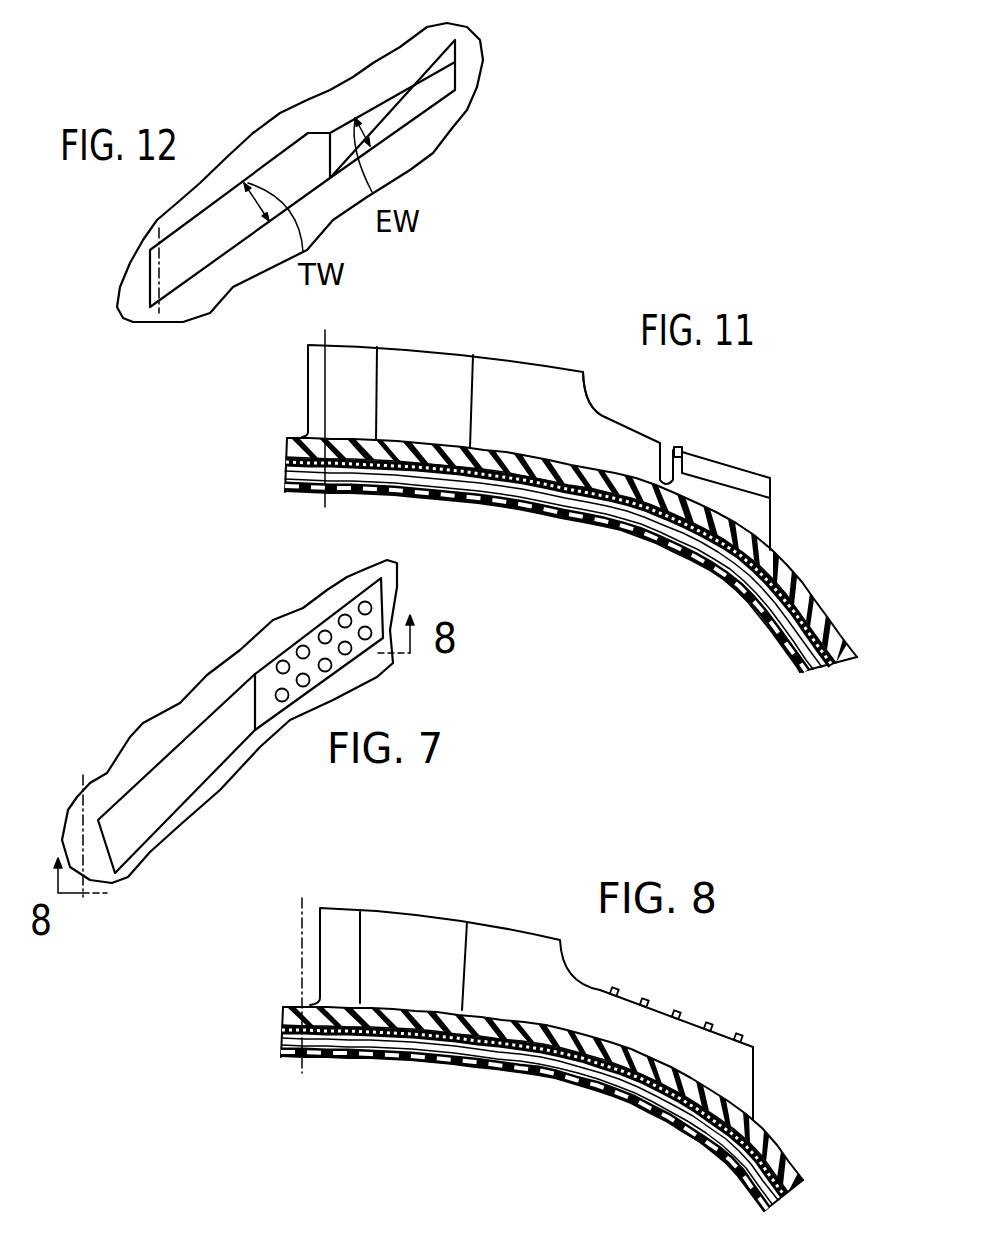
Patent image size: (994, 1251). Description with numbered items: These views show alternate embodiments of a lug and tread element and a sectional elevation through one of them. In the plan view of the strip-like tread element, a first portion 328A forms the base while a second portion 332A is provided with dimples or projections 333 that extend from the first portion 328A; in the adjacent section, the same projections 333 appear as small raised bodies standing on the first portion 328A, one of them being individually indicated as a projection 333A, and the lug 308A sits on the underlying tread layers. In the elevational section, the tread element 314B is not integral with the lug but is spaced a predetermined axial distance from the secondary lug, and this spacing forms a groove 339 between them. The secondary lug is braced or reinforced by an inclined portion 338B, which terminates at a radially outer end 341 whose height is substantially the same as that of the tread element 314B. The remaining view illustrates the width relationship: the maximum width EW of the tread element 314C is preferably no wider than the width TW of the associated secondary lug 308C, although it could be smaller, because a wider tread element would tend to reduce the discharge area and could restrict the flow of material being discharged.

In FIG. 12, the secondary lug 308C is at (212, 252).
In FIG. 12, the tread element 314C is at (410, 100).
In FIG. 11, the lug 308A is at (533, 362).
In FIG. 11, the inclined portion 338B is at (607, 418).
In FIG. 11, the radially outer end 341 is at (661, 445).
In FIG. 11, the groove 339 is at (668, 466).
In FIG. 11, the tread element 314B is at (733, 473).
In FIG. 7, the first portion 328A is at (343, 668).
In FIG. 8, the first portion 328A is at (727, 1060).
In FIG. 7, the second portion 332A is at (313, 642).
In FIG. 7, the projections 333 is at (365, 600).
In FIG. 8, the projections 333 is at (708, 1022).
In FIG. 8, the bump 333A is at (661, 1008).